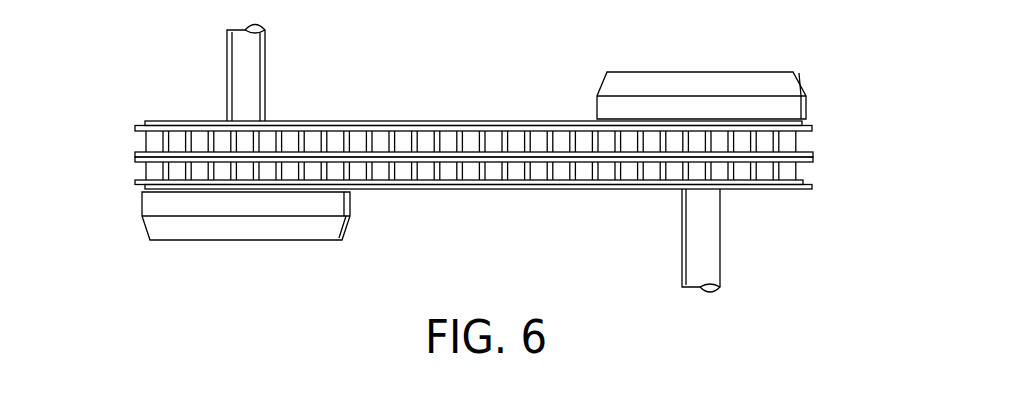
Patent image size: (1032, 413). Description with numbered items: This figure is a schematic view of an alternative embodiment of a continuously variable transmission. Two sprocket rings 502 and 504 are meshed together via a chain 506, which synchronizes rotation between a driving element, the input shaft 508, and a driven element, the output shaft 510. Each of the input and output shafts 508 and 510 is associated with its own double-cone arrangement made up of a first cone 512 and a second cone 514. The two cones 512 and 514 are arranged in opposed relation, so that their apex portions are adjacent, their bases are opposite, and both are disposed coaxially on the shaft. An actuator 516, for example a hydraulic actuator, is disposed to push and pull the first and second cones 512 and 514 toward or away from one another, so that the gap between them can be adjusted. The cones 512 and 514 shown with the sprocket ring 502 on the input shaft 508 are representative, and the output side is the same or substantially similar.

The sprocket ring 502 is at (112, 156).
The sprocket ring 504 is at (826, 156).
The chain 506 is at (470, 122).
The input shaft 508 is at (265, 70).
The output shaft 510 is at (720, 240).
The first cone 512 is at (340, 122).
The second cone 514 is at (350, 190).
The actuator 516 is at (262, 240).